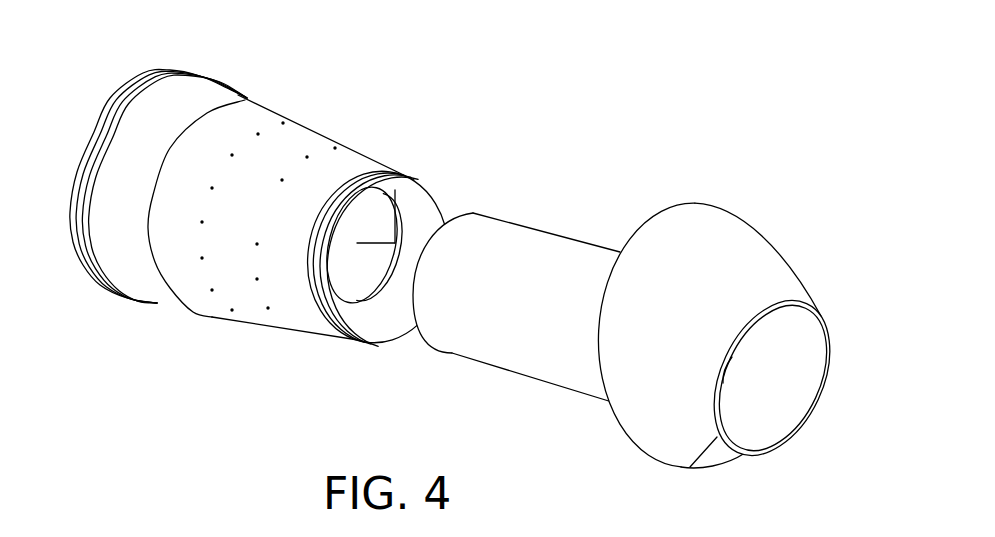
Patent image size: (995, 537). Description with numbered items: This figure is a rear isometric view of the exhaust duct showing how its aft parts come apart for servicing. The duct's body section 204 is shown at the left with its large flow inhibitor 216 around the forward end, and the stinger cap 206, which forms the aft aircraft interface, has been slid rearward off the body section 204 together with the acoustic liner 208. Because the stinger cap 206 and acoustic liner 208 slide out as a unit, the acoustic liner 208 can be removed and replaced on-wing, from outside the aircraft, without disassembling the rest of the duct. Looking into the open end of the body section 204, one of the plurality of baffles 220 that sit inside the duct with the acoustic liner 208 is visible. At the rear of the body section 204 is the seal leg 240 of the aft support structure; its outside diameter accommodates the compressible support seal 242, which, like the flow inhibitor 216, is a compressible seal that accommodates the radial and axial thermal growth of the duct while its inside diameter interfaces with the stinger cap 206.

The body section 204 is at (338, 108).
The stinger cap 206 is at (799, 224).
The acoustic liner 208 is at (515, 363).
The flow inhibitor 216 is at (198, 70).
The baffle 220 is at (378, 243).
The seal leg 240 is at (364, 253).
The compressible support seal 242 is at (322, 310).